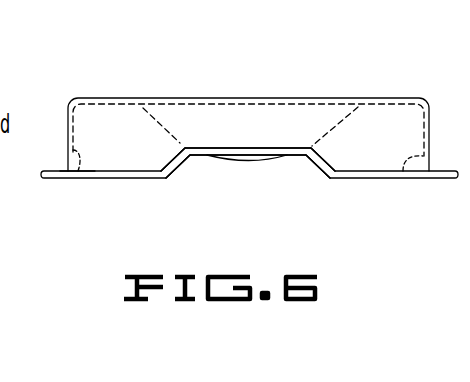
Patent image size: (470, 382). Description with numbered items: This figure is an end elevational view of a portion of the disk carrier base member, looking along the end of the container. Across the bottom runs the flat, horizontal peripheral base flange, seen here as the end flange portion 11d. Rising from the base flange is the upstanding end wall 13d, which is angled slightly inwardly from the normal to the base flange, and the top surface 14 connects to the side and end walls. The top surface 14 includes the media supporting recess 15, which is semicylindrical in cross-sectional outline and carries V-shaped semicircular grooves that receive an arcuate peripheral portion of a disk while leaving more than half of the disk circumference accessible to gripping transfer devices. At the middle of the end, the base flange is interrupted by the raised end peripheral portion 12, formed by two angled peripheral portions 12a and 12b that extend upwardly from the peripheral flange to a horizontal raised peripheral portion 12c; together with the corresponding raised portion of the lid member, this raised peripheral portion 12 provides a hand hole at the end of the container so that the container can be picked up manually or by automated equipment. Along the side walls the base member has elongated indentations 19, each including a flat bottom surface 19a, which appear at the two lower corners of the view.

The top surface 14 is at (375, 97).
The media supporting recess 15 is at (177, 135).
The end wall 13d is at (388, 156).
The flange portion 11d is at (50, 178).
The raised end peripheral portion 12 is at (252, 173).
The angled peripheral portion 12a is at (176, 161).
The angled peripheral portion 12b is at (323, 172).
The horizontal raised peripheral portion 12c is at (273, 160).
The elongated indentation 19 is at (65, 152).
The flat bottom surface 19a is at (78, 180).